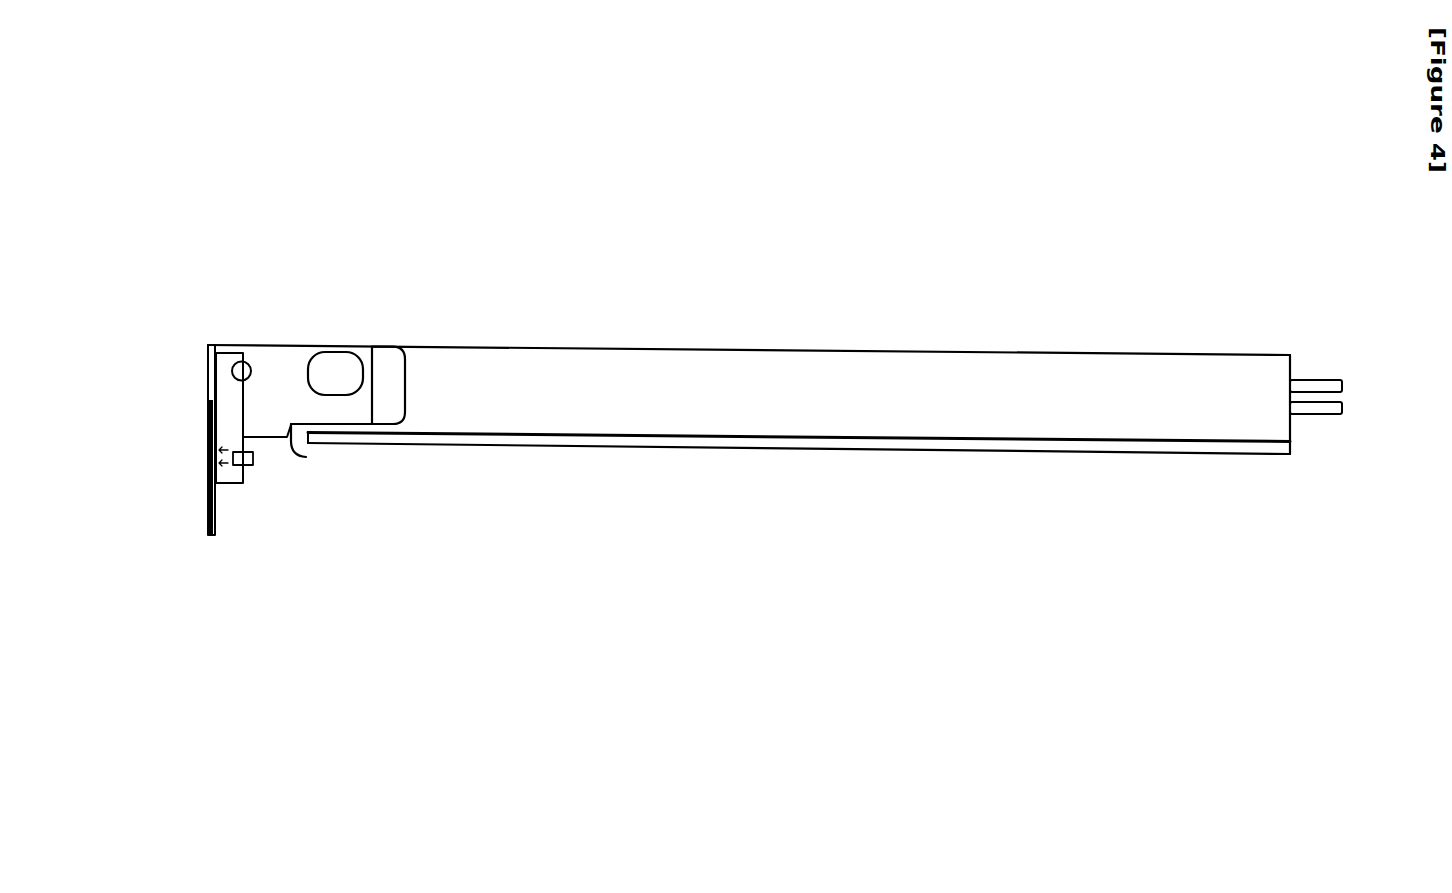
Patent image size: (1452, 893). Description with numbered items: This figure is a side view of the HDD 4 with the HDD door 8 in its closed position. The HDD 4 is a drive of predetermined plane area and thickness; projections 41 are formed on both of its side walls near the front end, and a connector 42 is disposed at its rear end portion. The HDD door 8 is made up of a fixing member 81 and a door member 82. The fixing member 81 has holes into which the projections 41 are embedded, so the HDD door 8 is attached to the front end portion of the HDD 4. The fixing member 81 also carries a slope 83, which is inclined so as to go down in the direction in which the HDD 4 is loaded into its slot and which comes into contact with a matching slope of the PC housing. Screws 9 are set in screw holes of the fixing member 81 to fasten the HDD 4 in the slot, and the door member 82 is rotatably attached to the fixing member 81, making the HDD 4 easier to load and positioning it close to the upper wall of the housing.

The HDD 4 is at (777, 449).
The projections 41 is at (338, 368).
The connector 42 is at (1305, 416).
The HDD door 8 is at (187, 350).
The fixing member 81 is at (300, 345).
The door member 82 is at (215, 517).
The slope 83 is at (291, 440).
The screws 9 is at (246, 466).